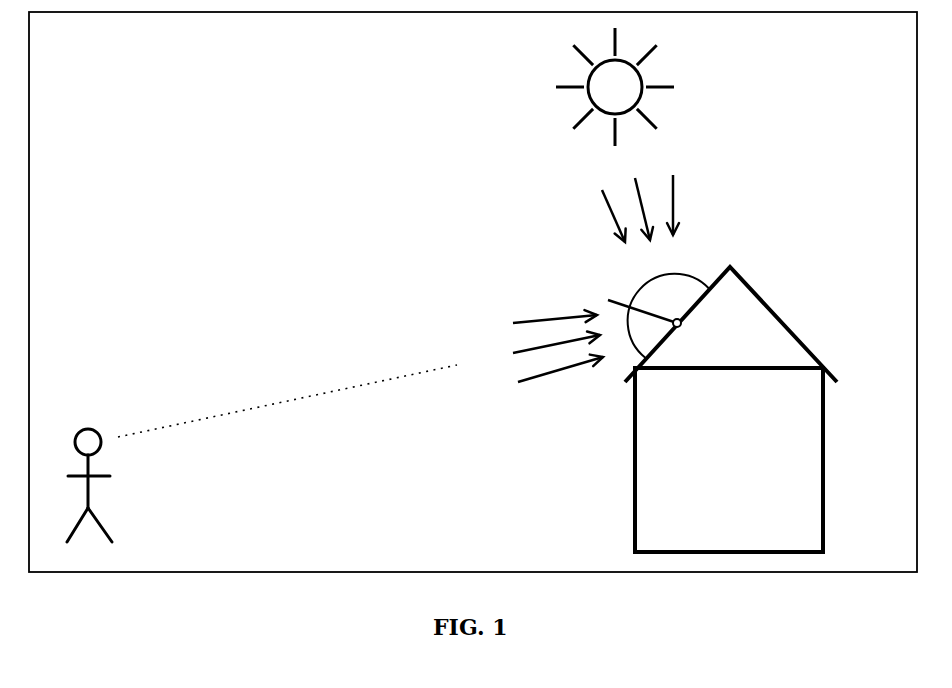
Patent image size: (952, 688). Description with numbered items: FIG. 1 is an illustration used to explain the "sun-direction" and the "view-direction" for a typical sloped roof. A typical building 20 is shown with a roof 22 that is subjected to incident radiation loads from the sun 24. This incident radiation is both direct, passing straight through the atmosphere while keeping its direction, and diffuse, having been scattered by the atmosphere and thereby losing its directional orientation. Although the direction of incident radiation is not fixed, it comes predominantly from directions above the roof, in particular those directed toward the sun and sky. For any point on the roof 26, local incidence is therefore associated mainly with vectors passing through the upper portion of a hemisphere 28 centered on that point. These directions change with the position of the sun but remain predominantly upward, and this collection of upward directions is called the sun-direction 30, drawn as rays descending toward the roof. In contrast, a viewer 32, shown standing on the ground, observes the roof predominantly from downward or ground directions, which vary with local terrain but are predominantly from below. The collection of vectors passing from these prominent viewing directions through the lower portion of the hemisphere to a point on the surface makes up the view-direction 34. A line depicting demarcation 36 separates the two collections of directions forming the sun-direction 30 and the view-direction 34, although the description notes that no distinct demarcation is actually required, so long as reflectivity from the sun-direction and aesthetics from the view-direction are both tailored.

The building 20 is at (625, 444).
The roof 22 is at (797, 318).
The sun 24 is at (537, 90).
The point on the roof 26 is at (687, 323).
The hemisphere 28 is at (687, 270).
The sun-direction 30 is at (622, 234).
The viewer 32 is at (88, 418).
The view-direction 34 is at (535, 312).
The line depicting demarcation 36 is at (610, 302).